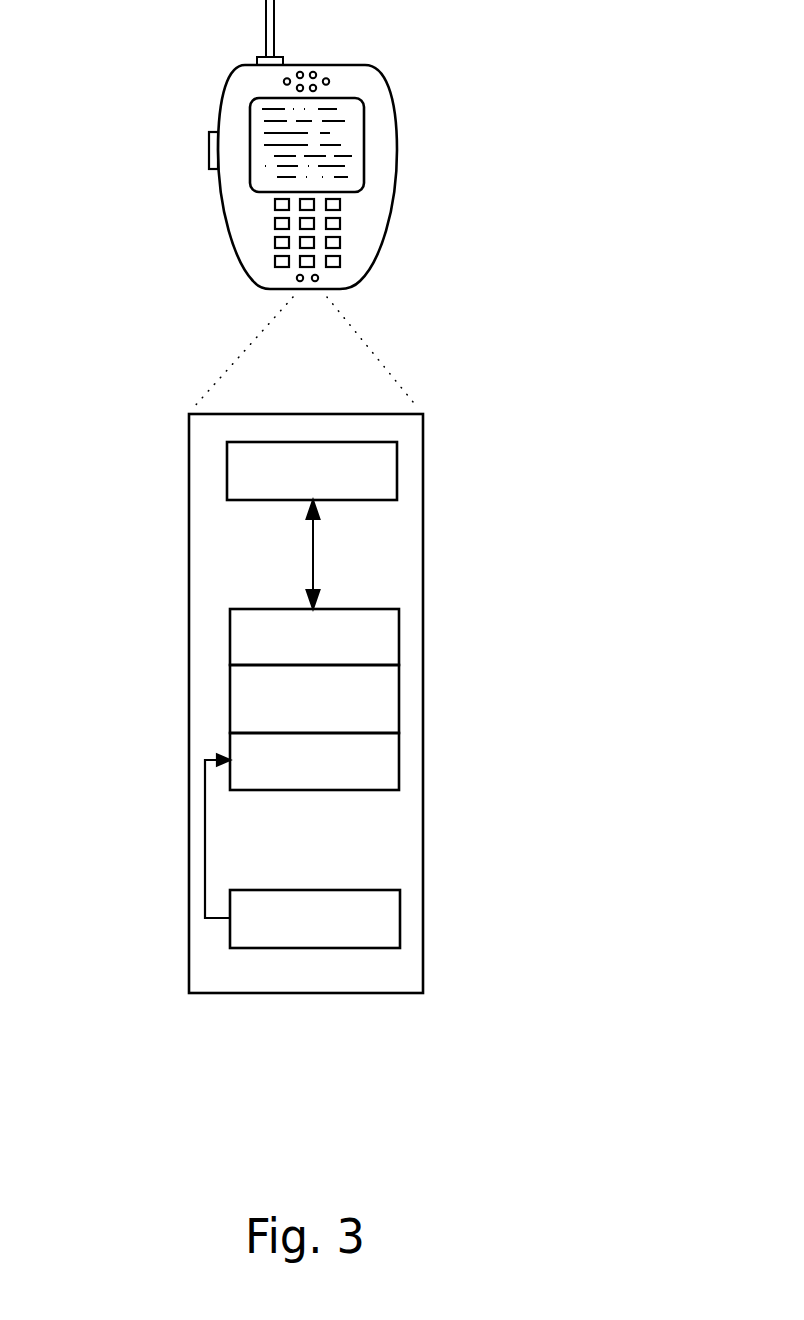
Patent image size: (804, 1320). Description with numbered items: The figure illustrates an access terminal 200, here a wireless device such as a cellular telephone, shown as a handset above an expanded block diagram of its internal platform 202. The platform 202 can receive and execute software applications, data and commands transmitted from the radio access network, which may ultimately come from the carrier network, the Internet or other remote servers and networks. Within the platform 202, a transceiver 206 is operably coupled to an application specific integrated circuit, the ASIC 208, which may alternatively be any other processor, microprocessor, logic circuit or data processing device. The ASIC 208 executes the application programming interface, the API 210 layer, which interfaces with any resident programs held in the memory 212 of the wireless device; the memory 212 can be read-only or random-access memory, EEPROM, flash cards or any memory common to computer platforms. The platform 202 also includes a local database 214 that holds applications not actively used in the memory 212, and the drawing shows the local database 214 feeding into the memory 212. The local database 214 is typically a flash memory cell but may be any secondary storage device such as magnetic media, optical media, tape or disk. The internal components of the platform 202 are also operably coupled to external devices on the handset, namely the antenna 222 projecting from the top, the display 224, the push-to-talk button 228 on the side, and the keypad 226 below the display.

The access terminal 200 is at (372, 267).
The platform 202 is at (189, 611).
The transceiver 206 is at (397, 470).
The application specific integrated circuit 208 is at (399, 644).
The application programming interface 210 is at (399, 693).
The memory 212 is at (399, 760).
The local database 214 is at (400, 901).
The antenna 222 is at (277, 3).
The display 224 is at (364, 131).
The keypad 226 is at (340, 224).
The push-to-talk button 228 is at (209, 143).